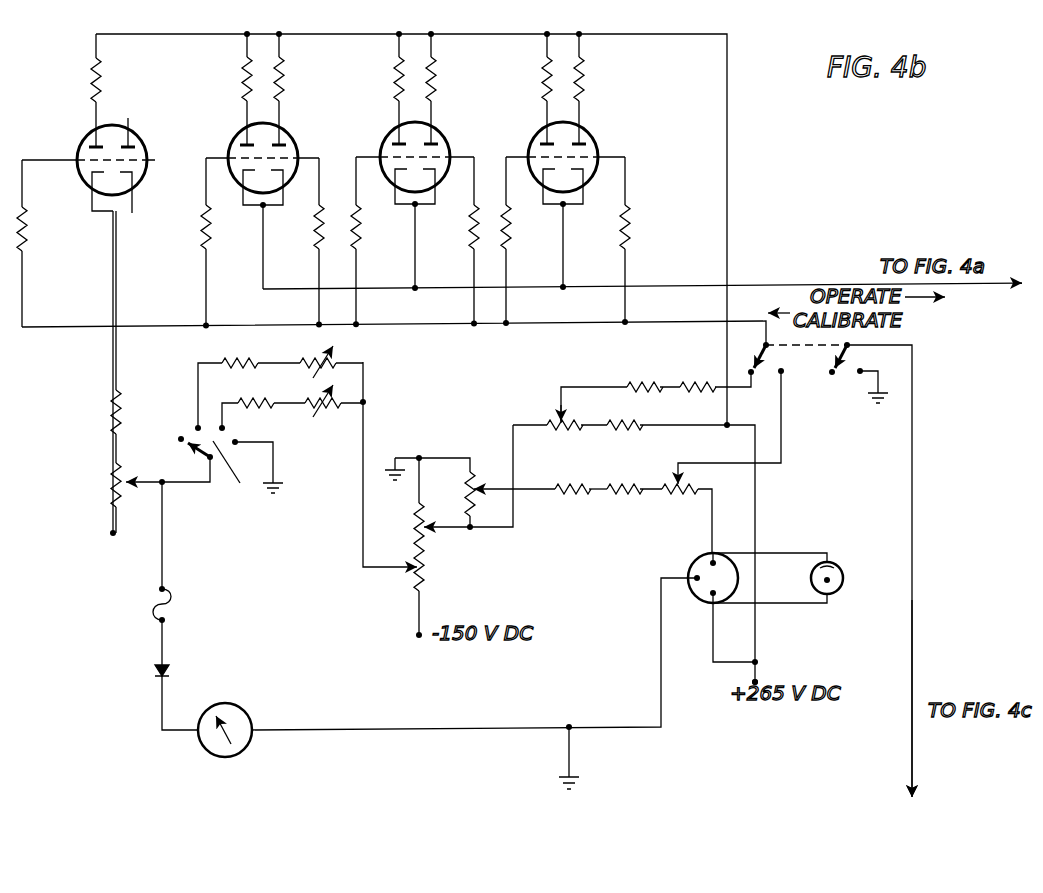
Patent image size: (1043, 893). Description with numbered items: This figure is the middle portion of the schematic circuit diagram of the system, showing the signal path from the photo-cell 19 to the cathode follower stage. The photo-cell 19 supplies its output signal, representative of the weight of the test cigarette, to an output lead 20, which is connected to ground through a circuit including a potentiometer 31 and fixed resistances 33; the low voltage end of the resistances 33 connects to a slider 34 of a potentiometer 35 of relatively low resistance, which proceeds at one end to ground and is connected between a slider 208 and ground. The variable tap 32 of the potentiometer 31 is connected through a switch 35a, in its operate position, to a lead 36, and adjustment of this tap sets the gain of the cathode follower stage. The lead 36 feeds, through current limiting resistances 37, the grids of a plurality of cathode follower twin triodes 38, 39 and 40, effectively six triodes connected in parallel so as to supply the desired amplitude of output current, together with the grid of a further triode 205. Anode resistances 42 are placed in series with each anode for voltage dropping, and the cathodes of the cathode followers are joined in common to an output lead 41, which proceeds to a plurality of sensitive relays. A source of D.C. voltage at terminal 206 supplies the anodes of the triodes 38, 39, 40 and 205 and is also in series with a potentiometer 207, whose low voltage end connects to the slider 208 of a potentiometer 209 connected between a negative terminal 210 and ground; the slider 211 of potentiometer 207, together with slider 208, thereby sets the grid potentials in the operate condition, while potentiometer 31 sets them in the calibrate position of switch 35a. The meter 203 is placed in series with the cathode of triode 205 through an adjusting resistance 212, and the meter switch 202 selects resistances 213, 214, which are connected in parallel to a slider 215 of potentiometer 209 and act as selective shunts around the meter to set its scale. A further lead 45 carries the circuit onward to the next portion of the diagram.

The further triode 205 is at (140, 139).
The cathode follower twin triode 38 is at (287, 130).
The cathode follower twin triode 39 is at (439, 135).
The cathode follower twin triode 40 is at (587, 128).
The anode resistances 42 is at (241, 70).
The current limiting resistances 37 is at (203, 234).
The output lead 41 is at (752, 283).
The lead 36 is at (588, 322).
The resistance 213 is at (303, 358).
The resistance 214 is at (309, 395).
The adjusting resistance 212 is at (112, 477).
The meter switch 202 is at (222, 467).
The slider 34 is at (479, 486).
The potentiometer 35 is at (466, 498).
The potentiometer 209 is at (430, 540).
The slider 208 is at (431, 530).
The slider 215 is at (412, 569).
The terminal 210 is at (423, 632).
The slider 211 is at (567, 420).
The potentiometer 207 is at (628, 428).
The variable tap 32 is at (677, 465).
The fixed resistances 33 is at (622, 493).
The potentiometer 31 is at (690, 494).
The switch 35a is at (768, 374).
The output lead 20 is at (710, 523).
The photo-cell 19 is at (843, 563).
The terminal 206 is at (760, 680).
The lead to FIG. 4c 45 is at (910, 660).
The meter 203 is at (236, 707).